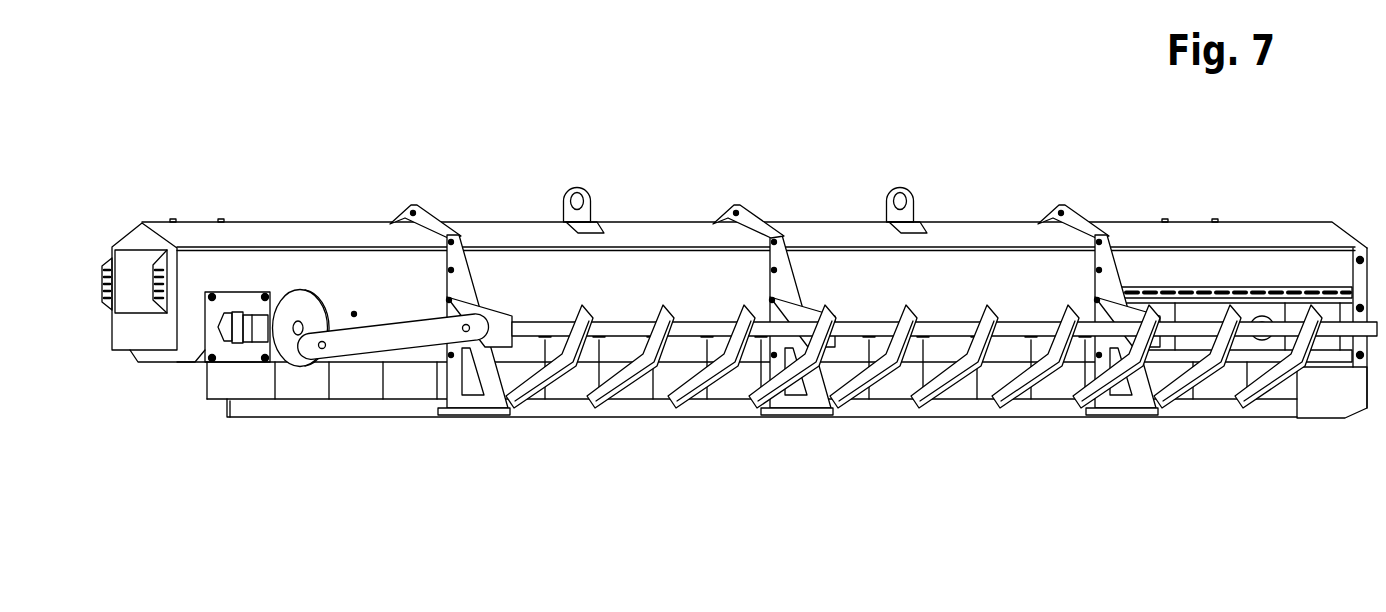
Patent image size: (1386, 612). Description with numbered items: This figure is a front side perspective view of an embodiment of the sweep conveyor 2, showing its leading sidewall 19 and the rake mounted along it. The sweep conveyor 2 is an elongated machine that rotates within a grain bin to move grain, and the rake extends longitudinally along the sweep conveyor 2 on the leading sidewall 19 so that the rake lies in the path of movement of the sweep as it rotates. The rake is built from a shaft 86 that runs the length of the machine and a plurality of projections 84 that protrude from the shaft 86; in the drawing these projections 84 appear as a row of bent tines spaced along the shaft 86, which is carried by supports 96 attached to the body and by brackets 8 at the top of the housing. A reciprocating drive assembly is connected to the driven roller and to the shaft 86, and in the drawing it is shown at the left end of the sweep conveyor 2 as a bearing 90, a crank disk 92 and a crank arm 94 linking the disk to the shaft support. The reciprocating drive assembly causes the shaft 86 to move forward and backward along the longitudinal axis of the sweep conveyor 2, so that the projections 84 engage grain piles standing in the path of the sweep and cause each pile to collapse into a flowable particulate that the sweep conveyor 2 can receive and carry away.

The sweep conveyor 2 is at (367, 140).
The pivot bracket 8 is at (733, 206).
The leading sidewall 19 is at (379, 379).
The projections 84 is at (658, 307).
The shaft 86 is at (867, 318).
The bearing 90 is at (263, 312).
The crank disk 92 is at (302, 290).
The crank arm 94 is at (391, 318).
The support bracket 96 is at (490, 303).